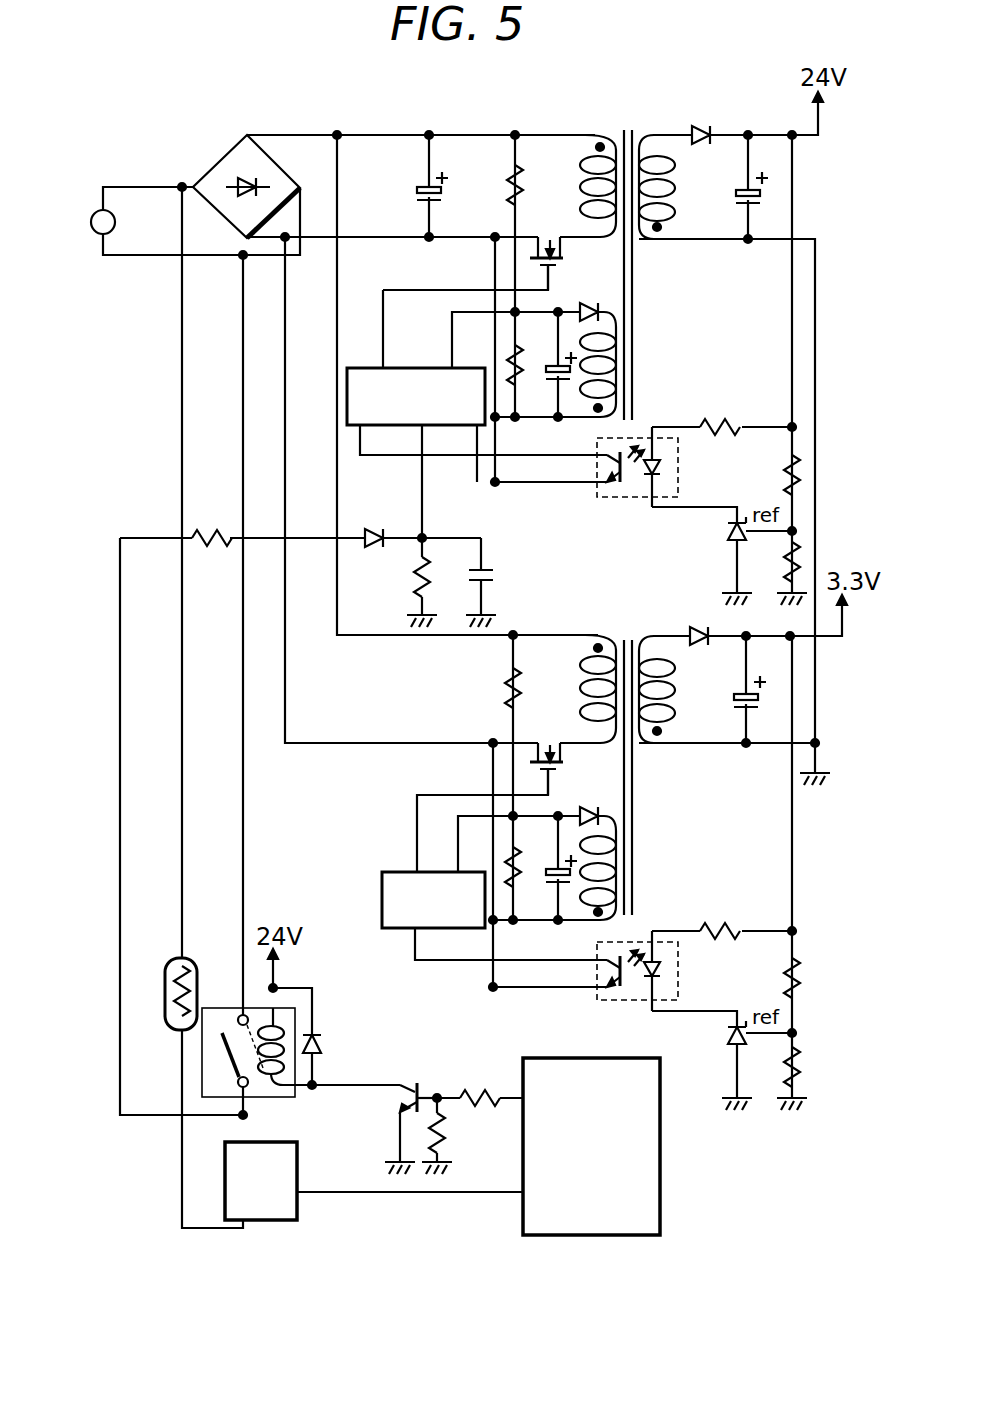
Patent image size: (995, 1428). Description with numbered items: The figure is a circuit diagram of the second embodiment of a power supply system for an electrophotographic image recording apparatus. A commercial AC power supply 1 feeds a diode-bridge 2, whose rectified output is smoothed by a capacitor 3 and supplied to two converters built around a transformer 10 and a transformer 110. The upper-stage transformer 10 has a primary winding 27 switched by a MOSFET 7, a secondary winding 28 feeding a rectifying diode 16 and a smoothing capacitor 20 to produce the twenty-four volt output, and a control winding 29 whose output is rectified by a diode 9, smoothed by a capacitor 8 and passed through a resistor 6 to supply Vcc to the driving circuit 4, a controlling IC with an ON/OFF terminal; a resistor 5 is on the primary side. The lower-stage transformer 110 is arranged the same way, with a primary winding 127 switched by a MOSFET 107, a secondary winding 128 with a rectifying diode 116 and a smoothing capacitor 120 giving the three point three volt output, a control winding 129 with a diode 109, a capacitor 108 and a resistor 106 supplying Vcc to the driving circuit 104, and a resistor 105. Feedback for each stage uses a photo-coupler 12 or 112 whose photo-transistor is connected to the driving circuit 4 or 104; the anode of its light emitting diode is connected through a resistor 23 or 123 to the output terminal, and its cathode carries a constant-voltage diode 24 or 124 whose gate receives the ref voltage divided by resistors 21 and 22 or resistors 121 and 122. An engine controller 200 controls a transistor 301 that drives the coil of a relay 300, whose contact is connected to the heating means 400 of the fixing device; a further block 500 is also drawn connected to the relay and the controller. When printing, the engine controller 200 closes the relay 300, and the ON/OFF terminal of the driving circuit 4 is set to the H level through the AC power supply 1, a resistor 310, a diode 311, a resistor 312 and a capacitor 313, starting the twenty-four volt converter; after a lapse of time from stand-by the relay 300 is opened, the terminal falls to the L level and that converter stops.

The commercial AC power supply 1 is at (93, 213).
The diode-bridge 2 is at (212, 160).
The capacitor 3 is at (420, 190).
The driving circuit 4 is at (366, 366).
The resistor 5 is at (524, 182).
The resistor 6 is at (522, 356).
The MOSFET 7 is at (567, 264).
The smoothing capacitor 8 is at (548, 386).
The rectifying diode 9 is at (596, 308).
The transformer 10 is at (627, 130).
The photo-coupler 12 is at (608, 500).
The rectifying diode 16 is at (704, 124).
The smoothing capacitor 20 is at (740, 192).
The resistor 21 is at (784, 478).
The resistor 22 is at (806, 562).
The resistor 23 is at (722, 420).
The constant-voltage diode 24 is at (728, 532).
The primary winding 27 is at (584, 200).
The secondary winding 28 is at (676, 206).
The control winding 29 is at (584, 410).
The driving circuit 104 is at (394, 872).
The resistor 105 is at (526, 694).
The resistor 106 is at (522, 858).
The MOSFET 107 is at (600, 797).
The smoothing capacitor 108 is at (550, 888).
The rectifying diode 109 is at (568, 766).
The transformer 110 is at (627, 636).
The photo-coupler 112 is at (608, 1003).
The rectifying diode 116 is at (697, 626).
The smoothing capacitor 120 is at (738, 697).
The resistor 121 is at (784, 982).
The resistor 122 is at (806, 1066).
The resistor 123 is at (722, 924).
The constant-voltage diode 124 is at (728, 1036).
The primary winding 127 is at (584, 700).
The secondary winding 128 is at (674, 710).
The control winding 129 is at (584, 914).
The engine controller 200 is at (656, 1238).
The relay 300 is at (270, 1098).
The transistor 301 is at (404, 1082).
The resistor 310 is at (212, 530).
The diode 311 is at (372, 530).
The resistor 312 is at (414, 584).
The capacitor 313 is at (496, 578).
The heating means 400 is at (197, 962).
The load 500 is at (296, 1224).